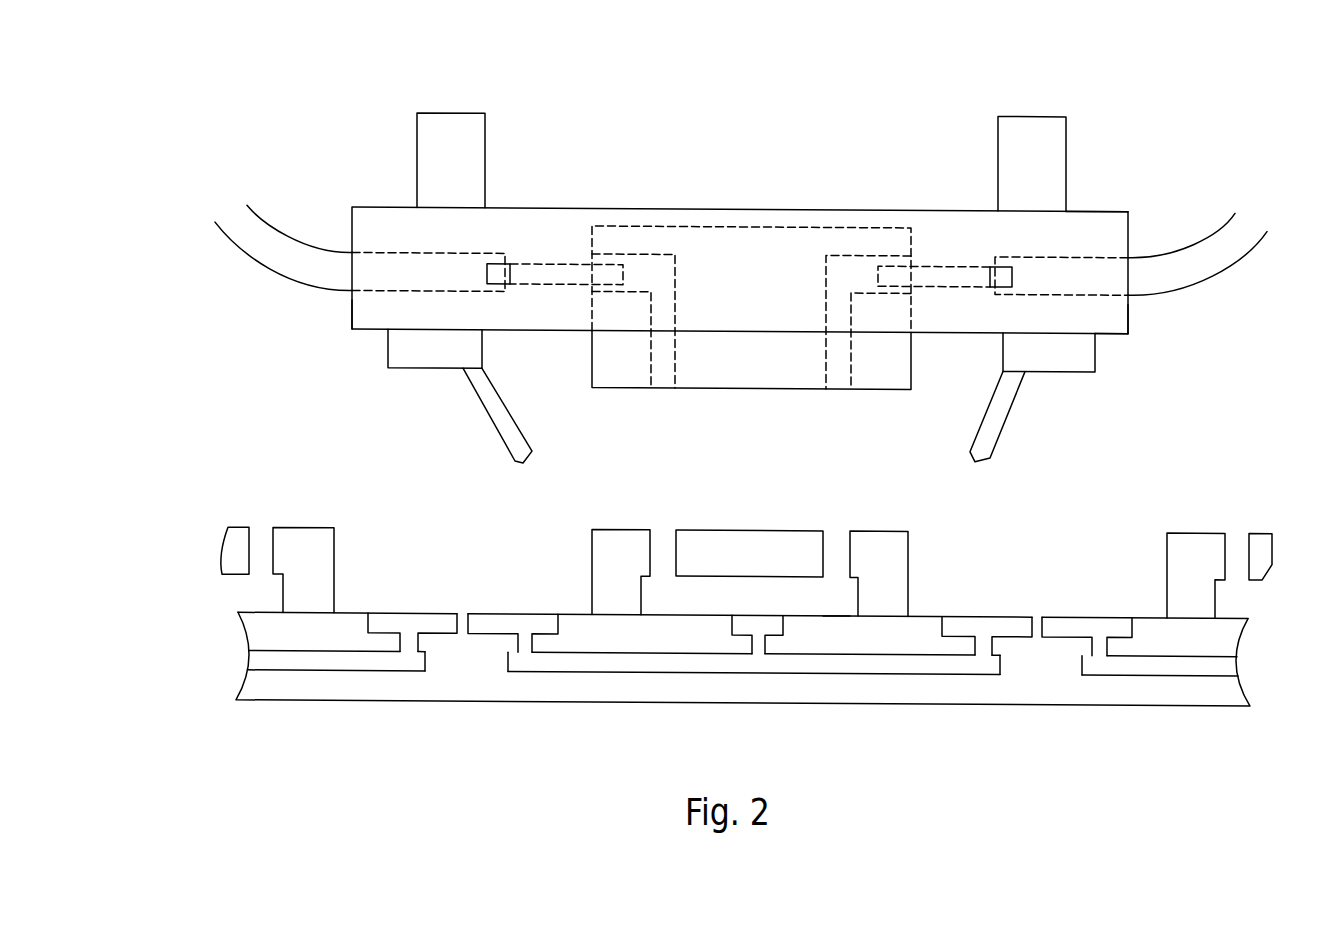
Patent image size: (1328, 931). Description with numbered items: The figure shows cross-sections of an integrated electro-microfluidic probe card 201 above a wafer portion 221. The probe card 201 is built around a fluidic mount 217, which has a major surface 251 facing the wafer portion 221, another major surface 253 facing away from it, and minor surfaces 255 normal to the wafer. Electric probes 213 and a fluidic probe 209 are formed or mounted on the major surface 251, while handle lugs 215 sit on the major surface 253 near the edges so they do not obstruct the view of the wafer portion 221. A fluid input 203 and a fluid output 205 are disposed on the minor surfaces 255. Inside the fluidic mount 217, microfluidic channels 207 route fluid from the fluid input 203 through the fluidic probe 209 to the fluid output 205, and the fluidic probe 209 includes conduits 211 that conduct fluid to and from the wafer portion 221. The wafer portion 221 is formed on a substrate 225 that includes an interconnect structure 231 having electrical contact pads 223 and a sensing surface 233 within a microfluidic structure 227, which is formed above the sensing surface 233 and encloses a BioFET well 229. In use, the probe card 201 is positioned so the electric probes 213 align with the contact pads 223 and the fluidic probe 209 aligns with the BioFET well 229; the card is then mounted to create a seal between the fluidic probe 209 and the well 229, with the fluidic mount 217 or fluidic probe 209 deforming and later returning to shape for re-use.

The integrated electro-microfluidic probe card 201 is at (357, 148).
The fluid input 203 is at (1265, 216).
The fluid output 205 is at (247, 242).
The microfluidic channels 207 is at (1085, 253).
The fluidic probe 209 is at (873, 386).
The conduits 211 is at (842, 283).
The electric probes 213 is at (500, 430).
The handle lugs 215 is at (1066, 110).
The fluidic mount 217 is at (903, 207).
The wafer portion 221 is at (291, 482).
The contact pads 223 is at (508, 599).
The substrate 225 is at (1046, 676).
The microfluidic structure 227 is at (908, 545).
The BioFET well 229 is at (772, 605).
The interconnect structure 231 is at (902, 660).
The sensing surface 233 is at (835, 611).
The major surface 251 is at (1117, 330).
The major surface 253 is at (1113, 207).
The minor surface 255 is at (352, 321).